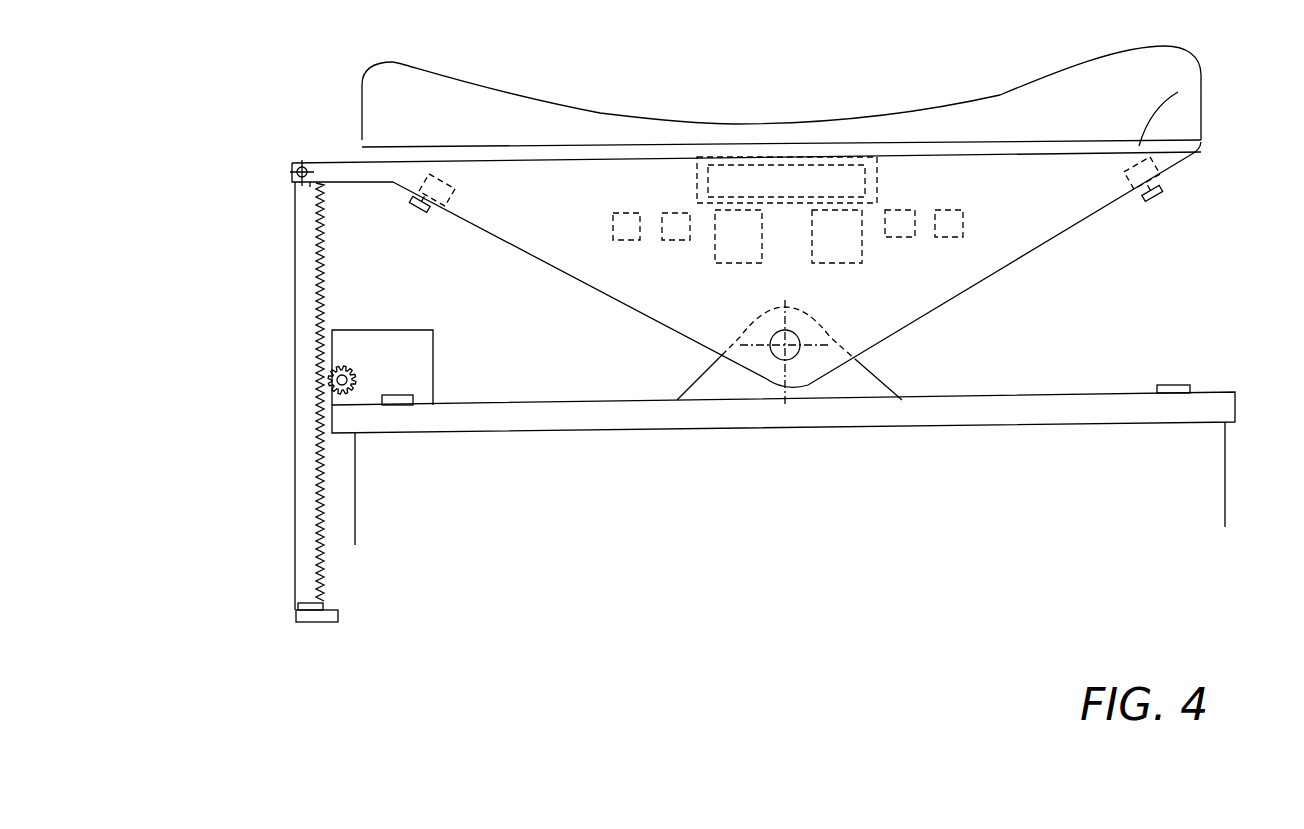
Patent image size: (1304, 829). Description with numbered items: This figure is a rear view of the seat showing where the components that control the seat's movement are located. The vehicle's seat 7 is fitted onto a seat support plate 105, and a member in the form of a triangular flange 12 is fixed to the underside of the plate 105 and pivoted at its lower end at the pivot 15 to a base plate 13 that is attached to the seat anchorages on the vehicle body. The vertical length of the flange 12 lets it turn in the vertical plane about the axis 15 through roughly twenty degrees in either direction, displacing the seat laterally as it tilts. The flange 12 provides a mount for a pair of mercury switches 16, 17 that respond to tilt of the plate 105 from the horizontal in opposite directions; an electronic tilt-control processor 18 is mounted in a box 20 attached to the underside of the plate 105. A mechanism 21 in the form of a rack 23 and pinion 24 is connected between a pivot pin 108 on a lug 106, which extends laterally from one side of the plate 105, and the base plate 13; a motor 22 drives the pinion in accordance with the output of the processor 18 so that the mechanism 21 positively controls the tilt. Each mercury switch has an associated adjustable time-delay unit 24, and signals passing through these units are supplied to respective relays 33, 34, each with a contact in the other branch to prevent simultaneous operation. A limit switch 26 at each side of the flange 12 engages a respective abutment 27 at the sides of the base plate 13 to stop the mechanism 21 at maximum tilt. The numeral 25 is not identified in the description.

The seat 7 is at (908, 103).
The seat support plate 105 is at (1178, 92).
The lug 106 is at (332, 170).
The pivot pin 108 is at (296, 165).
The triangular flange 12 is at (1052, 232).
The limit switch 26 is at (447, 197).
The box 20 is at (697, 185).
The electronic tilt-control processor 18 is at (742, 178).
The mercury switch 16 is at (626, 213).
The relay 33 is at (732, 255).
The relay 34 is at (837, 253).
The sensor 25 is at (905, 240).
The mercury switch 17 is at (948, 213).
The pivot axis 15 is at (798, 352).
The base plate 13 is at (1070, 410).
The abutment 27 is at (399, 395).
The motor 22 is at (397, 330).
The pinion 24 is at (327, 387).
The mechanism 21 is at (296, 370).
The rack 23 is at (303, 281).